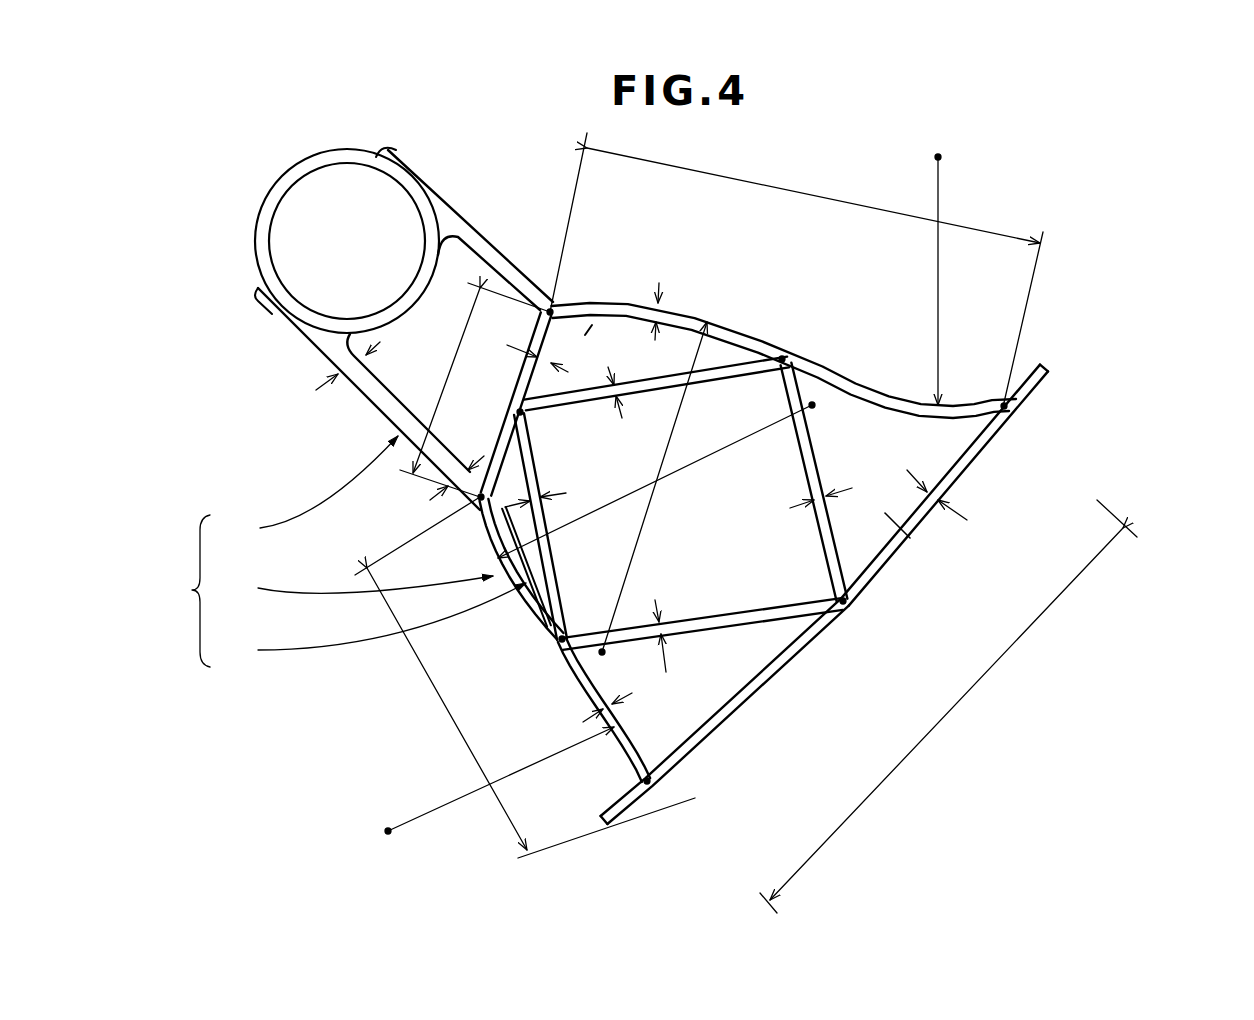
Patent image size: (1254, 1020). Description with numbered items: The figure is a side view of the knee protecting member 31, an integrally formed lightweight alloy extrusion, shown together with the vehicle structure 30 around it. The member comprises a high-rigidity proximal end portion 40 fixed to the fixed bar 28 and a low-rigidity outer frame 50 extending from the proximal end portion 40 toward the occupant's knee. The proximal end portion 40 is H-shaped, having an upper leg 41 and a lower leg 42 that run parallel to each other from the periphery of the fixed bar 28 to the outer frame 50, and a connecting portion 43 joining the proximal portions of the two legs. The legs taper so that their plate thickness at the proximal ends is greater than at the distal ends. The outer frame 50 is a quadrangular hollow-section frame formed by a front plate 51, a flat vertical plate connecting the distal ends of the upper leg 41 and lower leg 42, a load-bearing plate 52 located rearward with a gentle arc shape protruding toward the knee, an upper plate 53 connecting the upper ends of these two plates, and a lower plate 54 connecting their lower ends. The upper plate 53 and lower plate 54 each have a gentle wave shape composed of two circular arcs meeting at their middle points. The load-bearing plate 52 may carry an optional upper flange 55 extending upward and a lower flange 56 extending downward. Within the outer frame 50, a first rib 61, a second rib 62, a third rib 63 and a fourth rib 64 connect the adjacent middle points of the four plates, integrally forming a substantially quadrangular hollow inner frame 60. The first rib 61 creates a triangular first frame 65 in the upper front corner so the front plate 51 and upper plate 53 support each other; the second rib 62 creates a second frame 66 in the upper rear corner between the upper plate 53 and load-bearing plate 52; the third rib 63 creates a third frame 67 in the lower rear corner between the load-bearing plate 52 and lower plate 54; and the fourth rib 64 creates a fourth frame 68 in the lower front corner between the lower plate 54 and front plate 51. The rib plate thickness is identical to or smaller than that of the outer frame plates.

The fixed bar 28 is at (283, 178).
The frame member 30 is at (1168, 208).
The knee protecting member 31 is at (181, 591).
The proximal end portion 40 is at (308, 490).
The upper leg 41 is at (483, 237).
The lower leg 42 is at (370, 402).
The connecting portion 43 is at (413, 326).
The outer frame 50 is at (354, 589).
The front plate 51 is at (521, 375).
The load-bearing plate 52 is at (966, 468).
The upper plate 53 is at (733, 331).
The lower plate 54 is at (535, 617).
The upper flange 55 is at (1044, 378).
The lower flange 56 is at (602, 826).
The inner frame 60 is at (371, 623).
The first rib 61 is at (647, 390).
The second rib 62 is at (812, 455).
The third rib 63 is at (750, 613).
The fourth rib 64 is at (533, 462).
The first frame 65 is at (583, 338).
The second frame 66 is at (909, 537).
The third frame 67 is at (737, 665).
The fourth frame 68 is at (522, 553).